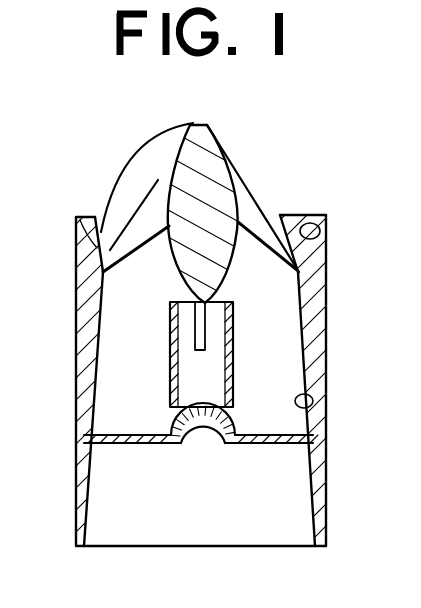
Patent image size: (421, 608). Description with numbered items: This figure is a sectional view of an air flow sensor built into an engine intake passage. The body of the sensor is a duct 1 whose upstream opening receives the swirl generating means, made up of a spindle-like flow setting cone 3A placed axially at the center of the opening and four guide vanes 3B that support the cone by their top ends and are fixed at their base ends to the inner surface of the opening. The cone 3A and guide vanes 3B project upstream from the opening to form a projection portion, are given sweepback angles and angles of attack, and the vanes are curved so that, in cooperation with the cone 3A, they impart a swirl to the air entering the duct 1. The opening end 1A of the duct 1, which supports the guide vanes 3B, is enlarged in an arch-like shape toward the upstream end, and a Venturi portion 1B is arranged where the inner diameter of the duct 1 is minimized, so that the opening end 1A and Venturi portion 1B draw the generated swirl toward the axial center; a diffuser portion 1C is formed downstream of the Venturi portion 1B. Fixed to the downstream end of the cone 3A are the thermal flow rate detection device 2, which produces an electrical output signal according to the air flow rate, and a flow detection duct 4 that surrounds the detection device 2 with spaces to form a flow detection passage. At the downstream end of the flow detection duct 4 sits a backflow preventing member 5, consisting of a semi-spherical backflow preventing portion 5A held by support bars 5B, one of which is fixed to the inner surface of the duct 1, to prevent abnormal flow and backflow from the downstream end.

The duct 1 is at (327, 333).
The opening end 1A is at (320, 229).
The Venturi portion 1B is at (296, 274).
The diffuser portion 1C is at (325, 405).
The thermal flow rate detection device 2 is at (202, 352).
The flow setting cone 3A is at (205, 150).
The guide vanes 3B is at (130, 182).
The flow detection duct 4 is at (170, 360).
The backflow preventing member 5 is at (201, 474).
The backflow preventing portion 5A is at (203, 452).
The support bars 5B is at (273, 445).